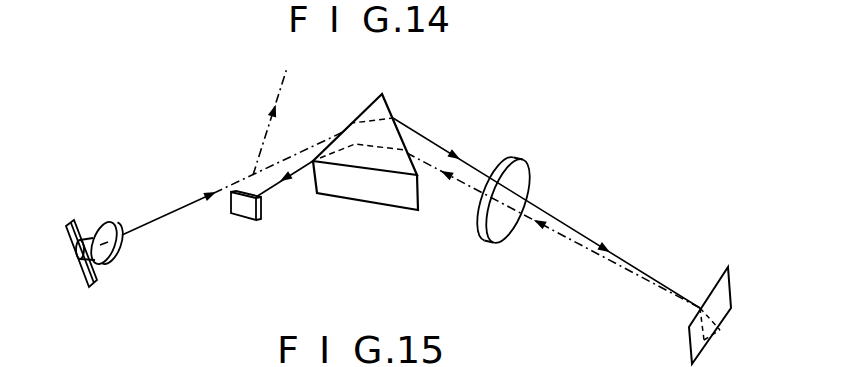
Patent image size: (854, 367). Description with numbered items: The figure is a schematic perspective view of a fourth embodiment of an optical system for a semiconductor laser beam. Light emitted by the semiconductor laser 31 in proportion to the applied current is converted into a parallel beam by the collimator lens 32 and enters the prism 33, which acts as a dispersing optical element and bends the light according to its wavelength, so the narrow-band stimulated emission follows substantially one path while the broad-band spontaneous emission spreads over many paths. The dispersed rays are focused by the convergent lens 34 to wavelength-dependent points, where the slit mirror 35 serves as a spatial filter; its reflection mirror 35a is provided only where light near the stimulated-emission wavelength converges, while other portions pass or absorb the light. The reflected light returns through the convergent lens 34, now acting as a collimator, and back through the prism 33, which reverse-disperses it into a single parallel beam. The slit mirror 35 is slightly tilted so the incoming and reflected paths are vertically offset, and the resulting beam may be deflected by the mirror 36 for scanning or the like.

The semiconductor laser 31 is at (77, 222).
The collimator lens 32 is at (112, 222).
The prism 33 is at (383, 110).
The convergent lens 34 is at (520, 172).
The slit mirror 35 is at (725, 287).
The reflection mirror 35a is at (720, 330).
The mirror 36 is at (243, 208).